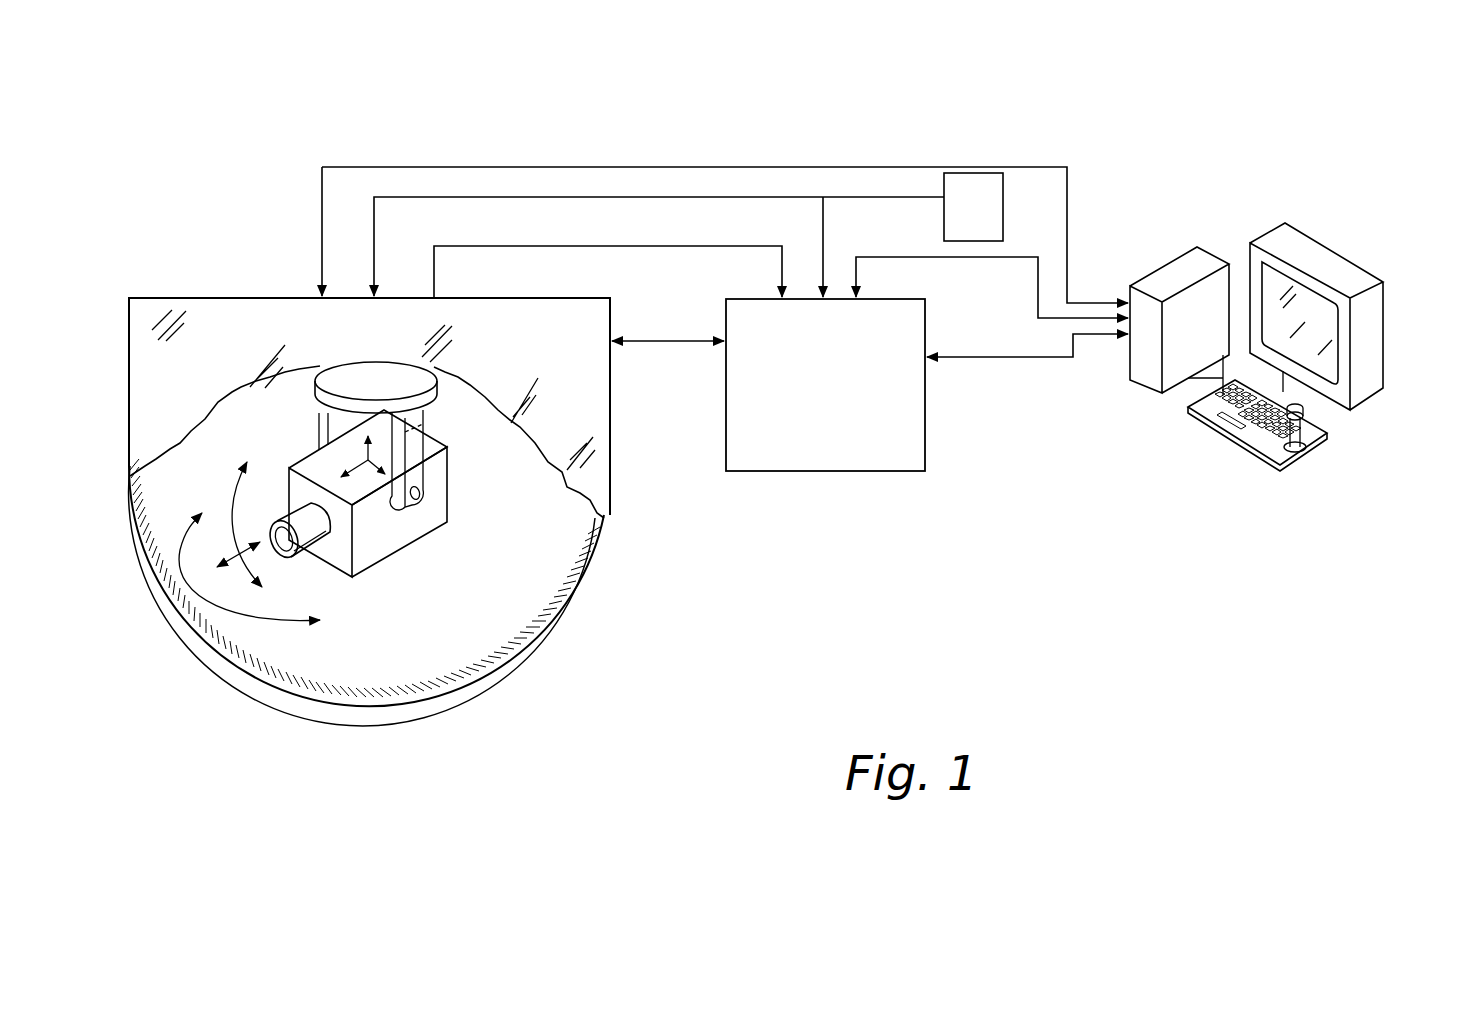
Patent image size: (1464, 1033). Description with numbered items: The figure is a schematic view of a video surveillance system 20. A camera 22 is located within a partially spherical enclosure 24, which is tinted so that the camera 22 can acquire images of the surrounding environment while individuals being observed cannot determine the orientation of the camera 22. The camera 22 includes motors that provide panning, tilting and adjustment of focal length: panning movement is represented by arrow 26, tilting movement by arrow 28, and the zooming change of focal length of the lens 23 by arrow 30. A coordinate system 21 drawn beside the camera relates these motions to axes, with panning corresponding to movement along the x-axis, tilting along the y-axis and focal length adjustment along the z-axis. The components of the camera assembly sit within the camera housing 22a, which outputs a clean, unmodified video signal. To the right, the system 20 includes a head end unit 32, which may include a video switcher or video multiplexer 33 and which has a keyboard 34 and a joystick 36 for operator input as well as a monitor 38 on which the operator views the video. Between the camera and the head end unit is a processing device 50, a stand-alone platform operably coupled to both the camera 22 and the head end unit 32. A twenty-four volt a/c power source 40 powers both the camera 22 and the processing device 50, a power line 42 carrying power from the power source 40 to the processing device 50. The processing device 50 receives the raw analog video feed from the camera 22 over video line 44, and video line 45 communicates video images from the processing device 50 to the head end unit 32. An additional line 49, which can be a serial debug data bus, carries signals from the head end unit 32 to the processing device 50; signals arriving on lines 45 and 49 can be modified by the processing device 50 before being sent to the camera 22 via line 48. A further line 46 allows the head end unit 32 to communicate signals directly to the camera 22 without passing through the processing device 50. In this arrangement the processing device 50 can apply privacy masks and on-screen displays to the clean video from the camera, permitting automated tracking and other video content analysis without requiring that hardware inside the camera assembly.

The video surveillance system 20 is at (598, 121).
The coordinate system 21 is at (366, 461).
The camera 22 is at (459, 550).
The camera housing 22a is at (393, 540).
The lens 23 is at (278, 528).
The partially spherical enclosure 24 is at (597, 487).
The arrow 26 is at (243, 624).
The arrow 28 is at (232, 478).
The arrow 30 is at (258, 553).
The head end unit 32 is at (1165, 520).
The video switcher or video multiplexer 33 is at (1172, 265).
The keyboard 34 is at (1203, 420).
The joystick 36 is at (1320, 442).
The monitor 38 is at (1343, 337).
The 24 volt a/c power source 40 is at (990, 173).
The power line 42 is at (805, 197).
The video line 44 is at (632, 246).
The video line 45 is at (1006, 258).
The line 46 is at (660, 167).
The line 48 is at (662, 342).
The line 49 is at (983, 358).
The processing device 50 is at (925, 465).